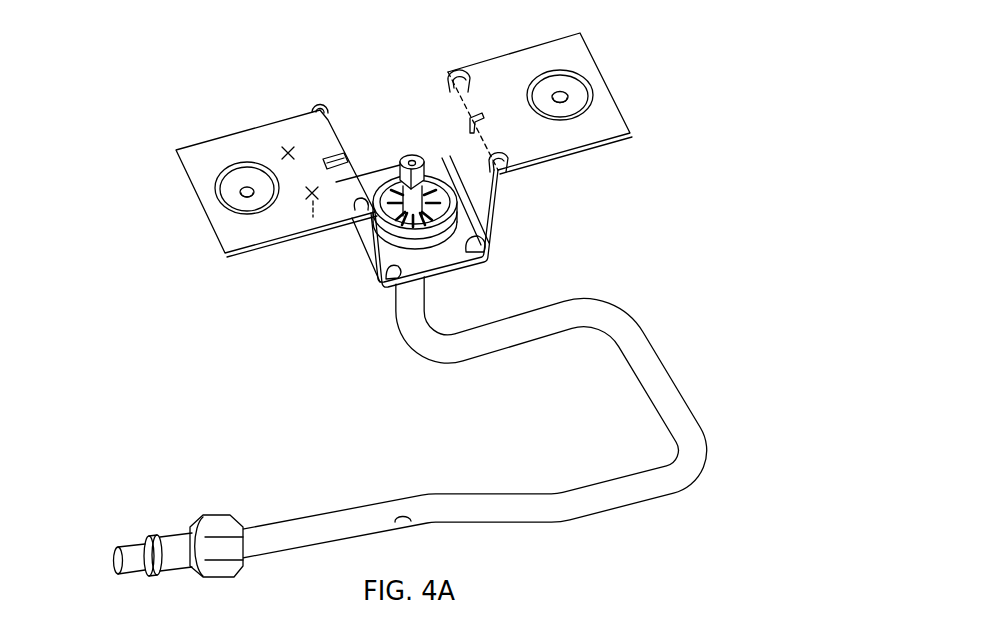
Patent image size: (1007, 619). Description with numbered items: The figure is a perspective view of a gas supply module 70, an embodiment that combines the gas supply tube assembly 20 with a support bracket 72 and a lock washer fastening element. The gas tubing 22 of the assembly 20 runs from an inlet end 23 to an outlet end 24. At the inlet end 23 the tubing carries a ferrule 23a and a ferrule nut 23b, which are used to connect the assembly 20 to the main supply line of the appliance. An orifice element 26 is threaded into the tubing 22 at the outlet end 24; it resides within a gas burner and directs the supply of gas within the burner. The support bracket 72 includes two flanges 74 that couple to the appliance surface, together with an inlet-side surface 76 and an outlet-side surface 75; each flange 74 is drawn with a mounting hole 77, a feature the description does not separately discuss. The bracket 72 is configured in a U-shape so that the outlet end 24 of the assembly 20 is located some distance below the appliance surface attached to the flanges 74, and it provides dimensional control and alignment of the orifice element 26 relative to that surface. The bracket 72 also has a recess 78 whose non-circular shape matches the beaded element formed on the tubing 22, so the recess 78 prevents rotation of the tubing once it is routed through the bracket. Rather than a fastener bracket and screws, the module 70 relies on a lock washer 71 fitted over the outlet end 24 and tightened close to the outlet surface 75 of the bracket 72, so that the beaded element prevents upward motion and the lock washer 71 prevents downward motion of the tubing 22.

The gas supply tube assembly 20 is at (411, 419).
The gas tubing 22 is at (683, 400).
The inlet end 23 is at (169, 513).
The ferrule 23a is at (143, 540).
The ferrule nut 23b is at (220, 513).
The outlet end 24 is at (366, 262).
The orifice element 26 is at (412, 158).
The gas supply module 70 is at (474, 177).
The lock washer 71 is at (476, 214).
The support bracket 72 is at (431, 177).
The flanges 74 is at (603, 127).
The outlet-side surface 75 is at (288, 150).
The inlet-side surface 76 is at (312, 214).
The mounting hole 77 is at (561, 97).
The recess 78 is at (467, 247).